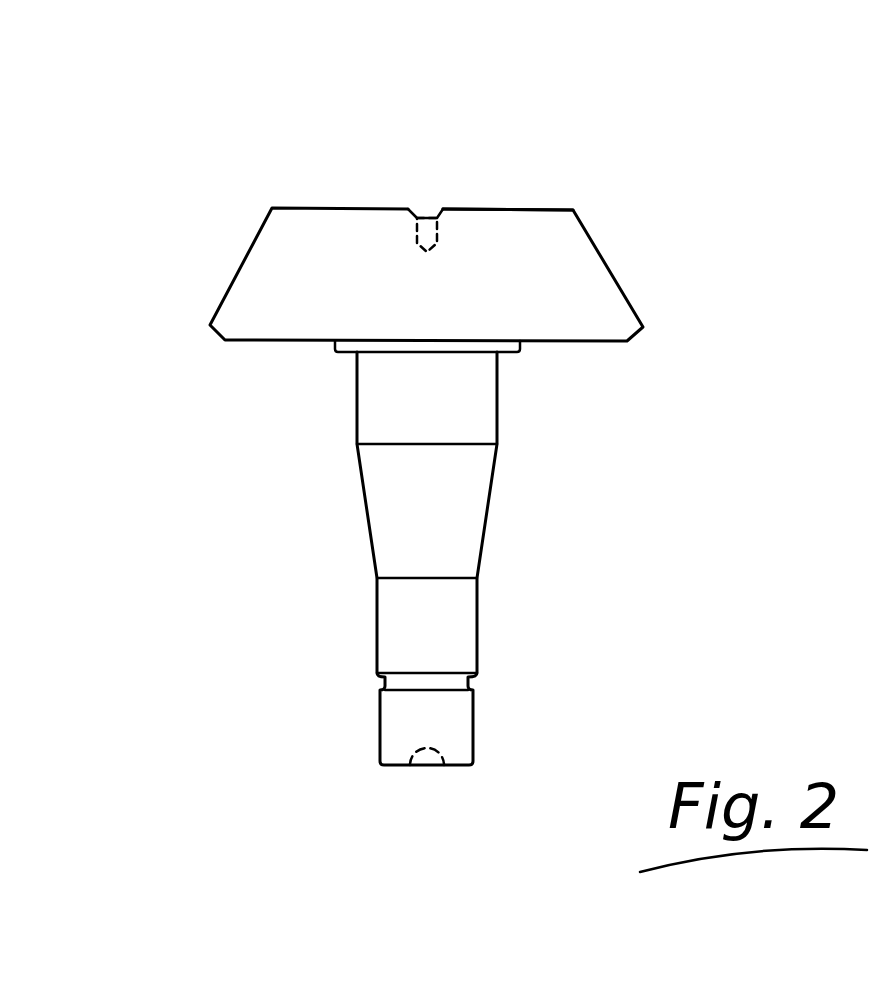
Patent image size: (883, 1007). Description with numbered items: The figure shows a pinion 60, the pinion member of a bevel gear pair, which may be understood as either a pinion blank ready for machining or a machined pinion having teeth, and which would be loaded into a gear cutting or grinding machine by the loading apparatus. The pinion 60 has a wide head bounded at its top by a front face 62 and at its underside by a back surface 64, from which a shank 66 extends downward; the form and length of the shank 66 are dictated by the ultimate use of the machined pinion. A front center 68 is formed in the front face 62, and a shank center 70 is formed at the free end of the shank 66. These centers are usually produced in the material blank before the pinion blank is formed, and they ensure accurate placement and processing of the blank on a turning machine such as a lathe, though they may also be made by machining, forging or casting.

The pinion 60 is at (625, 252).
The front face 62 is at (538, 202).
The back surface 64 is at (575, 348).
The shank 66 is at (358, 508).
The front center 68 is at (424, 212).
The shank center 70 is at (423, 753).